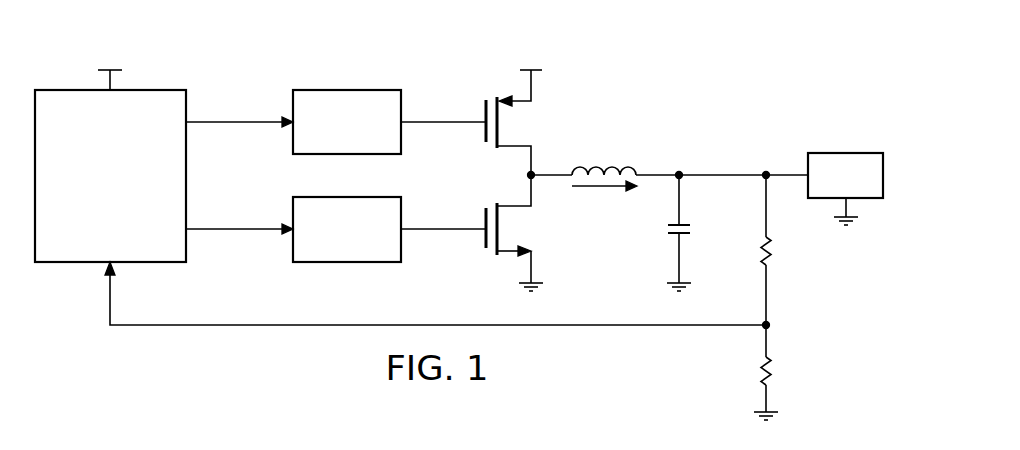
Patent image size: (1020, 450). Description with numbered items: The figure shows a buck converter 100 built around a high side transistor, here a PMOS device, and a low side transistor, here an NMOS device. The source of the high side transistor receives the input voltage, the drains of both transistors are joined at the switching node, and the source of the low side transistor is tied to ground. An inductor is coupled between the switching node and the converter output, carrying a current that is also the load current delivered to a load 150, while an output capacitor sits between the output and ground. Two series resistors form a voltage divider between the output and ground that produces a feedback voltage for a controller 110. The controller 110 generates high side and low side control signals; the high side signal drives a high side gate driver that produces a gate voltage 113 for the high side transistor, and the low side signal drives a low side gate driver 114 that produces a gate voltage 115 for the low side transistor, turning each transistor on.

The buck converter 100 is at (659, 51).
The controller 110 is at (92, 208).
The gate voltage 113 is at (443, 124).
The low side gate driver 114 is at (345, 262).
The gate voltage 115 is at (443, 231).
The load 150 is at (855, 152).